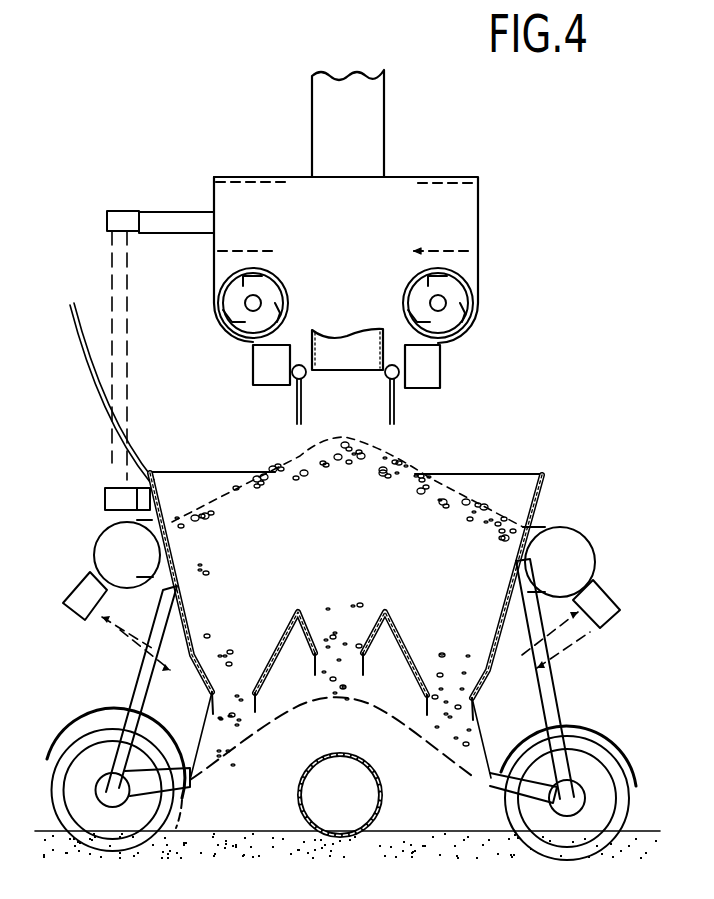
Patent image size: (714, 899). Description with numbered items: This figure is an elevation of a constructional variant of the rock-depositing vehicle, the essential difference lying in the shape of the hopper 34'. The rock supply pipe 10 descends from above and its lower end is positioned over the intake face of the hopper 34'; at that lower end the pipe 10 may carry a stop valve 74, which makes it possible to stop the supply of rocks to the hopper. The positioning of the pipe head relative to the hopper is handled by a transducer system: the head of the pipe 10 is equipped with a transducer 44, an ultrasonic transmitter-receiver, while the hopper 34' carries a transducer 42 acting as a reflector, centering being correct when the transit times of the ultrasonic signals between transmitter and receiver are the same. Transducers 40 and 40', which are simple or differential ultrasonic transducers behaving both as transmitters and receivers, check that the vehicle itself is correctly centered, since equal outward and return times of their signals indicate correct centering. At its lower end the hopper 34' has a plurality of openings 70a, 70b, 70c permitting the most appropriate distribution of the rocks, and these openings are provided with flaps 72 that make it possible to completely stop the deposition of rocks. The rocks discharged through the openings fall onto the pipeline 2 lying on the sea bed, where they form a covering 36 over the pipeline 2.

The pipe 10 is at (328, 121).
The transducer 44 is at (126, 210).
The stop valve 74 is at (297, 410).
The hopper 34' is at (346, 604).
The transducer 42 is at (105, 498).
The transducer 40 is at (115, 595).
The transducer 40' is at (571, 600).
The opening 70a is at (446, 651).
The opening 70b is at (335, 601).
The opening 70c is at (232, 632).
The flap 72 is at (427, 706).
The covering 36 is at (316, 736).
The pipeline 2 is at (299, 797).